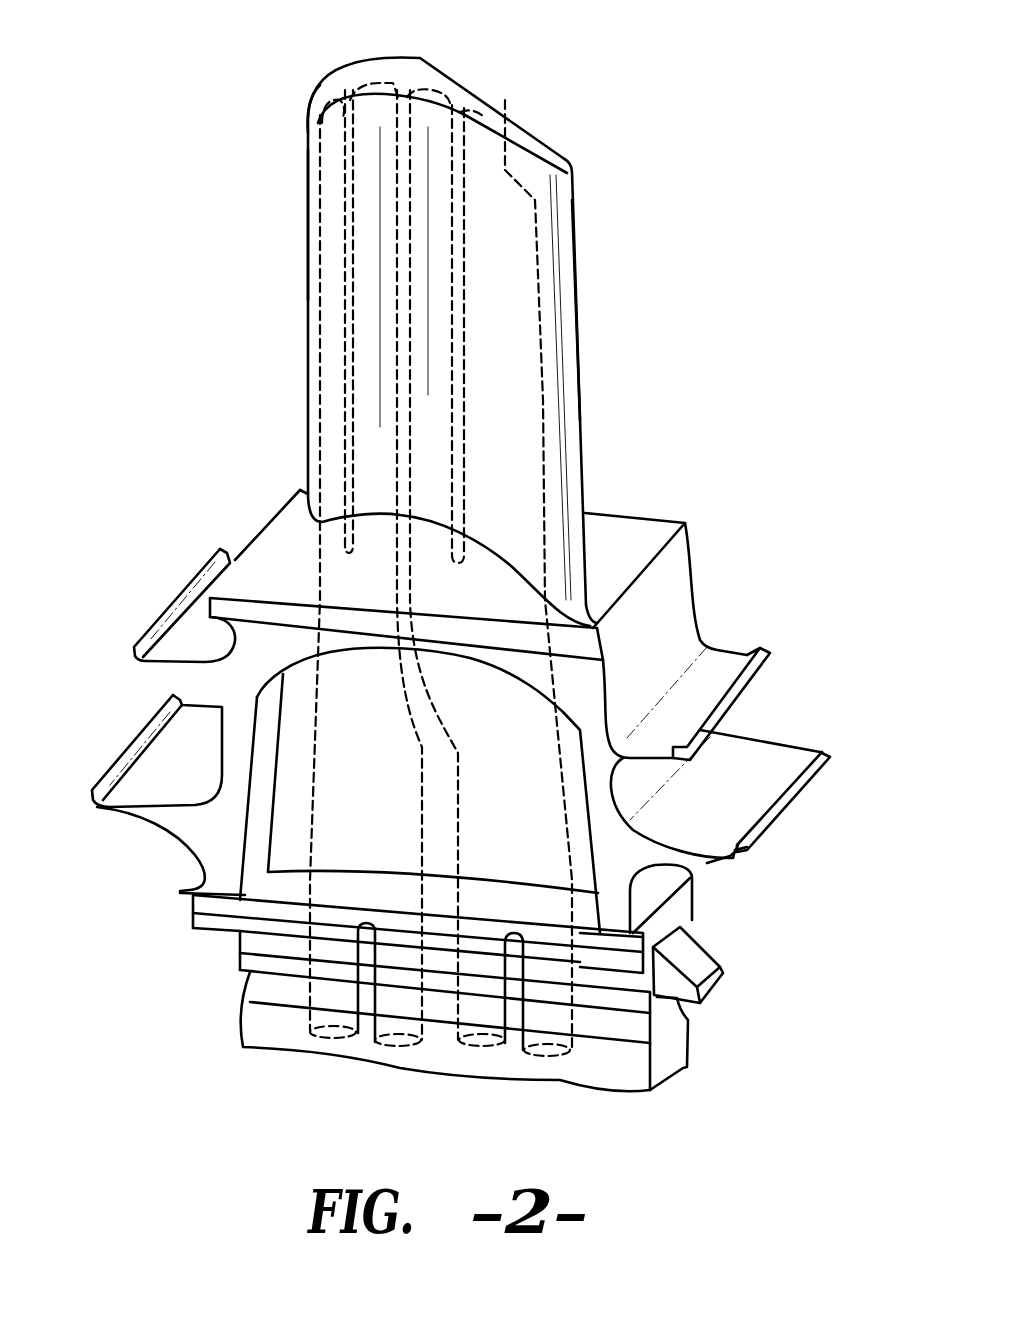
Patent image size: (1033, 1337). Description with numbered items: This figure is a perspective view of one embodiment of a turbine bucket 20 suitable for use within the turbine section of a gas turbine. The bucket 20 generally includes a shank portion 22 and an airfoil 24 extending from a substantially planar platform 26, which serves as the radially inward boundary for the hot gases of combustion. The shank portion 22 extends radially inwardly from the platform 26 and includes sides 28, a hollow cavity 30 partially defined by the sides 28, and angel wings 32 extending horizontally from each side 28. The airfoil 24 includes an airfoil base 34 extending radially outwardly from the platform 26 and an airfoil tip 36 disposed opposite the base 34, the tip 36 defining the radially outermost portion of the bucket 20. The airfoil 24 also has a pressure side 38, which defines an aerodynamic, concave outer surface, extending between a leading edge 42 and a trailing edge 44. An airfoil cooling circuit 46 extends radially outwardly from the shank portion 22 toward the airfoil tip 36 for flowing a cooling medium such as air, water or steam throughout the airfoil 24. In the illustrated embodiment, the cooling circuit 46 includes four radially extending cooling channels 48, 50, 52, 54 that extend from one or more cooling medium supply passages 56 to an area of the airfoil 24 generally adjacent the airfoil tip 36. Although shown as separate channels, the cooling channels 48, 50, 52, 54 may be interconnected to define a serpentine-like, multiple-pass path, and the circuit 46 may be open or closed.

The turbine bucket 20 is at (643, 115).
The shank portion 22 is at (182, 830).
The airfoil 24 is at (582, 247).
The platform 26 is at (278, 560).
The sides 28 is at (230, 853).
The hollow cavity 30 is at (290, 885).
The angel wings 32 is at (183, 593).
The airfoil base 34 is at (302, 493).
The airfoil tip 36 is at (330, 73).
The pressure side 38 is at (551, 366).
The leading edge 42 is at (308, 200).
The trailing edge 44 is at (578, 308).
The airfoil cooling circuit 46 is at (322, 257).
The cooling channel 48 is at (318, 305).
The cooling channel 50 is at (347, 356).
The cooling channel 52 is at (457, 130).
The cooling channel 54 is at (543, 447).
The cooling medium supply passages 56 is at (403, 1047).